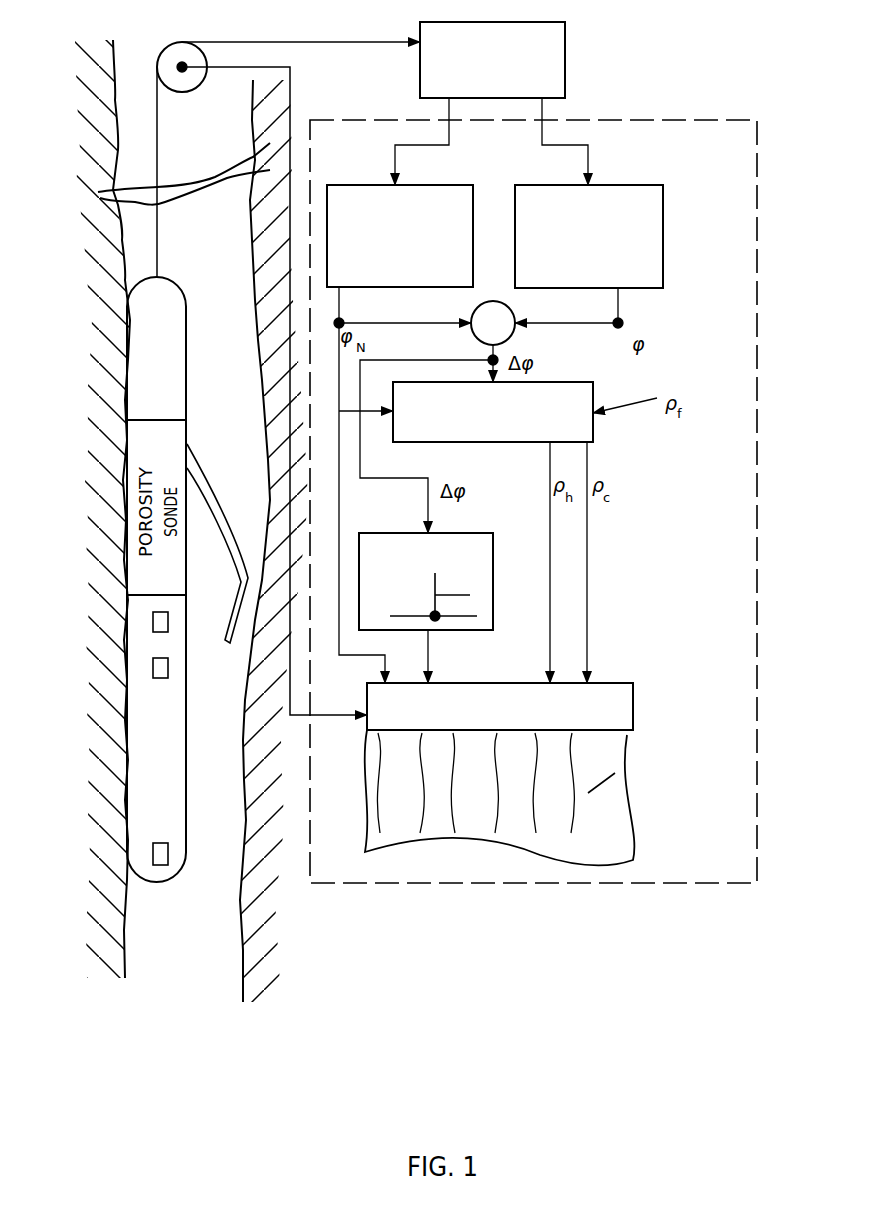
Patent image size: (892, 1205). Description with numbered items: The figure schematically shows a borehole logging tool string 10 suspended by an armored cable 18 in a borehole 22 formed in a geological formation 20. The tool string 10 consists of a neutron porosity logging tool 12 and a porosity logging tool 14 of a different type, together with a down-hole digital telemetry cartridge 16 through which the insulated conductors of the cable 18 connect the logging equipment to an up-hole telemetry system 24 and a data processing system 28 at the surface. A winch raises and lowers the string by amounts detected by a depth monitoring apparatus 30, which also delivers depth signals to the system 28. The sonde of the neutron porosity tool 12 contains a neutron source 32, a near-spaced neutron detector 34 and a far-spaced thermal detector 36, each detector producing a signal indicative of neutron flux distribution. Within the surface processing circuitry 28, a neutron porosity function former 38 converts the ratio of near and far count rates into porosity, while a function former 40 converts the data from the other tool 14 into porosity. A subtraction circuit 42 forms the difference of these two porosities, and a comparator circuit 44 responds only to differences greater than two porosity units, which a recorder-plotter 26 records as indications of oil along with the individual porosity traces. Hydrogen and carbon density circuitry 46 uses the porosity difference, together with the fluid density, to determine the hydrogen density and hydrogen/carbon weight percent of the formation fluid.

The borehole logging tool string 10 is at (185, 278).
The neutron porosity logging tool 12 is at (186, 668).
The porosity logging tool 14 is at (190, 437).
The down-hole digital telemetry cartridge 16 is at (186, 343).
The armored cable 18 is at (157, 250).
The geological formation 20 is at (90, 275).
The borehole 22 is at (118, 130).
The up-hole telemetry system 24 is at (565, 52).
The recorder-plotter 26 is at (633, 703).
The data processing system 28 is at (665, 120).
The depth monitoring apparatus 30 is at (207, 52).
The neutron source 32 is at (168, 855).
The near-spaced neutron detector 34 is at (168, 676).
The far-spaced thermal detector 36 is at (168, 617).
The neutron porosity function former 38 is at (458, 185).
The function former 40 is at (660, 185).
The subtraction circuit 42 is at (512, 330).
The comparator circuit 44 is at (493, 582).
The hydrogen and carbon density circuitry 46 is at (597, 398).